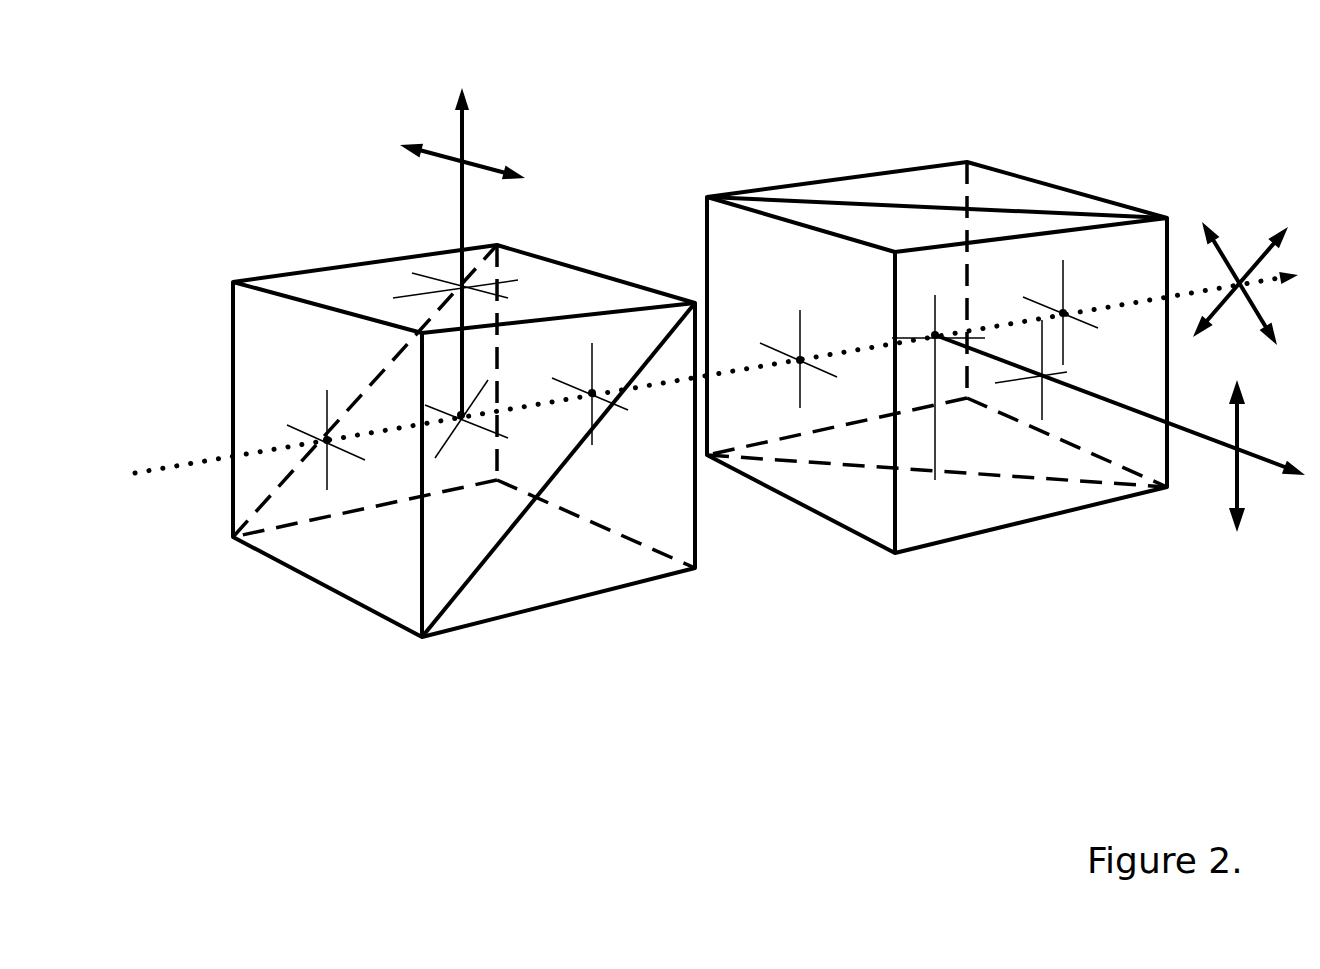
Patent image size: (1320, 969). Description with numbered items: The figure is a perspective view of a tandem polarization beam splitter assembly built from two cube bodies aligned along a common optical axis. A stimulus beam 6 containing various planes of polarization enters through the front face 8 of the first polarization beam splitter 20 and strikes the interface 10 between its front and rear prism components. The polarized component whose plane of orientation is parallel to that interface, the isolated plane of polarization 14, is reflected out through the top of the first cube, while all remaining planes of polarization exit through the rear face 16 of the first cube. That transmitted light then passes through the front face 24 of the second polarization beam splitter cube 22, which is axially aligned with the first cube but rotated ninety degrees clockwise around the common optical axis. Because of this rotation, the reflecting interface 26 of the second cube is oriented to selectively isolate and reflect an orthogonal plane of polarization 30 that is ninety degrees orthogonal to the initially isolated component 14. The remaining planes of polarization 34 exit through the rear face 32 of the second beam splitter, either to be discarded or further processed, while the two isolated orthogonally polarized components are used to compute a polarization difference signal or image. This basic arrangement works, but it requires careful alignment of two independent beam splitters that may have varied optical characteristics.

The stimulus beam 6 is at (716, 372).
The front face of the beam splitter 8 is at (327, 440).
The interface 10 is at (461, 415).
The isolated plane of polarization 14 is at (475, 251).
The rear face of the beam splitter cube 16 is at (592, 393).
The polarization beam splitter 20 is at (232, 313).
The second polarization beam splitter cube 22 is at (705, 247).
The front face of the second beam splitter cube 24 is at (800, 360).
The reflecting interface of the second cube 26 is at (935, 480).
The orthogonal plane of polarization 30 is at (1125, 438).
The rear face of the second beam splitter 32 is at (1063, 313).
The remaining planes of polarization 34 is at (1246, 267).